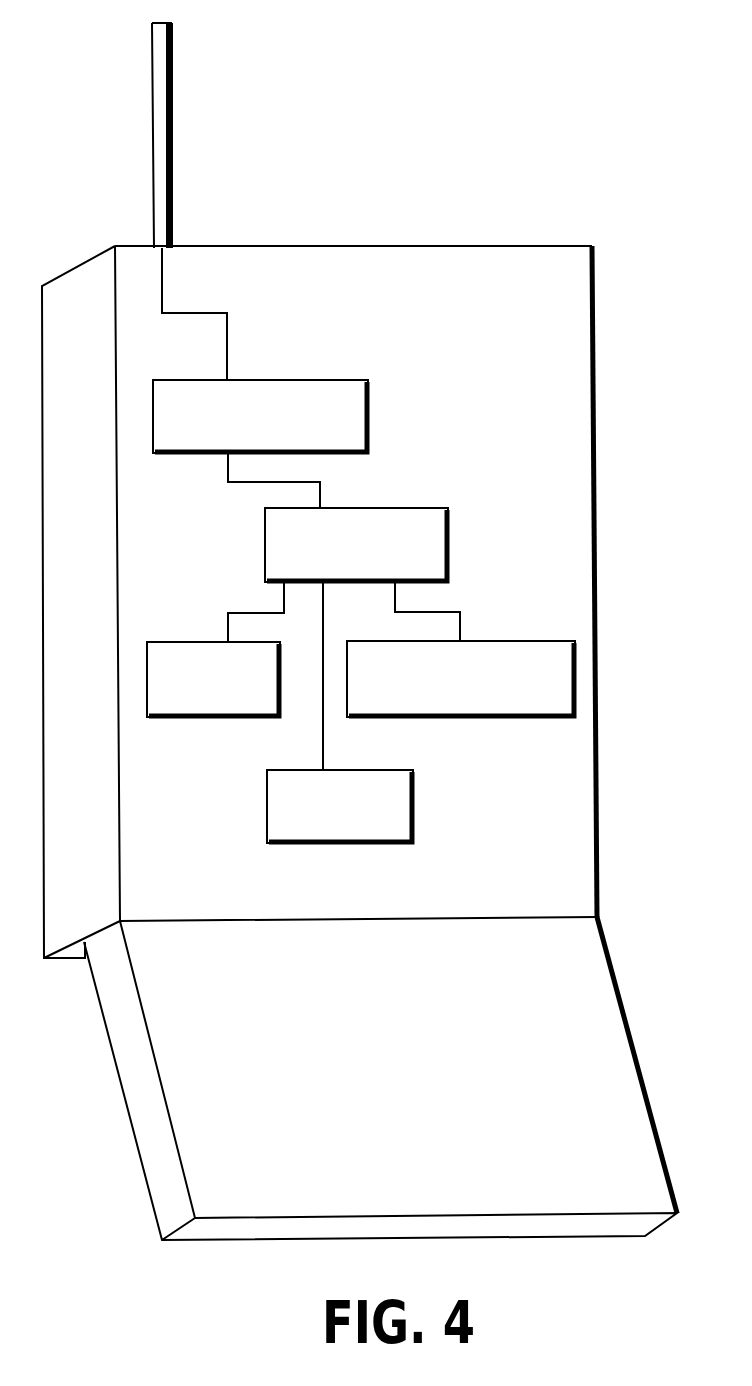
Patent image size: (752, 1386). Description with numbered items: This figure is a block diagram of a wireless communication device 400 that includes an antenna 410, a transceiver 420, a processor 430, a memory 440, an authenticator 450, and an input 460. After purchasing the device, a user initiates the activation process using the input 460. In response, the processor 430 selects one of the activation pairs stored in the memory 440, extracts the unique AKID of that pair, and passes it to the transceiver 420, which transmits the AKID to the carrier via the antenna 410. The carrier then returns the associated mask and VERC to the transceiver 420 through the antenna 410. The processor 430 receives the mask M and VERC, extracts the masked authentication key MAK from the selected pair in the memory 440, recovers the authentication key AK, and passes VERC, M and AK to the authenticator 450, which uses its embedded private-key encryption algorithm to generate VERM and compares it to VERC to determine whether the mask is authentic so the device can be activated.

The wireless communication device 400 is at (478, 138).
The antenna 410 is at (173, 162).
The transceiver 420 is at (313, 380).
The processor 430 is at (415, 508).
The memory 440 is at (190, 642).
The authenticator 450 is at (512, 641).
The input 460 is at (413, 802).